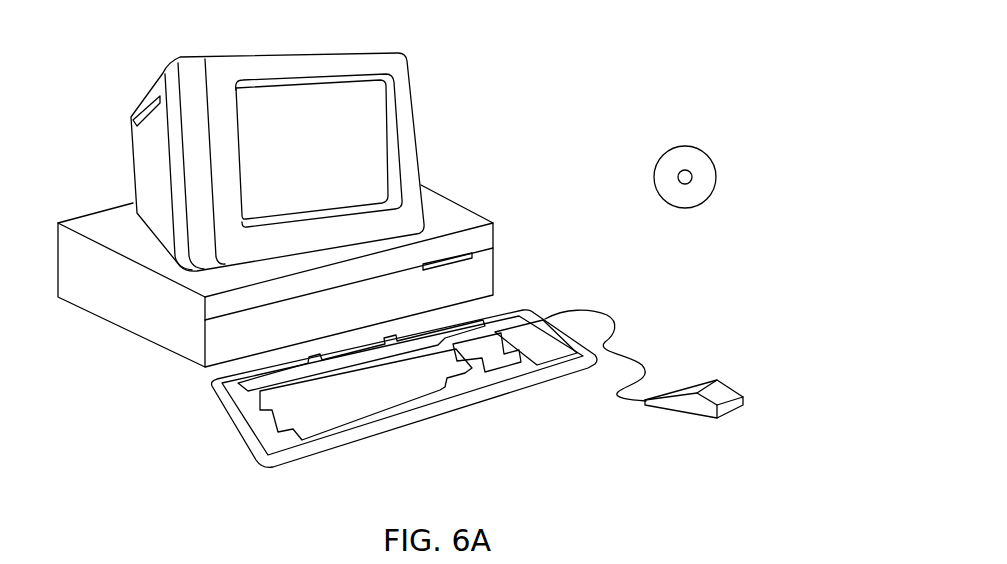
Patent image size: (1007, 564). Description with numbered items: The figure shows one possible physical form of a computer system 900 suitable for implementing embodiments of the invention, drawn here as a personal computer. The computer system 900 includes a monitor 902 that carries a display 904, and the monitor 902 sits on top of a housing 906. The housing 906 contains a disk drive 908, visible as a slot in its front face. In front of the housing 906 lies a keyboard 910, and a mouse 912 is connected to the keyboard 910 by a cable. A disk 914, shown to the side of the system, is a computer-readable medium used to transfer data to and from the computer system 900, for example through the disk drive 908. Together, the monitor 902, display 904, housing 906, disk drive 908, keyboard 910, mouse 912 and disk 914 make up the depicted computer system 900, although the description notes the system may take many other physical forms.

The computer system 900 is at (604, 35).
The monitor 902 is at (418, 158).
The display 904 is at (378, 113).
The housing 906 is at (168, 352).
The disk drive 908 is at (473, 253).
The keyboard 910 is at (405, 424).
The mouse 912 is at (731, 392).
The disk 914 is at (699, 148).